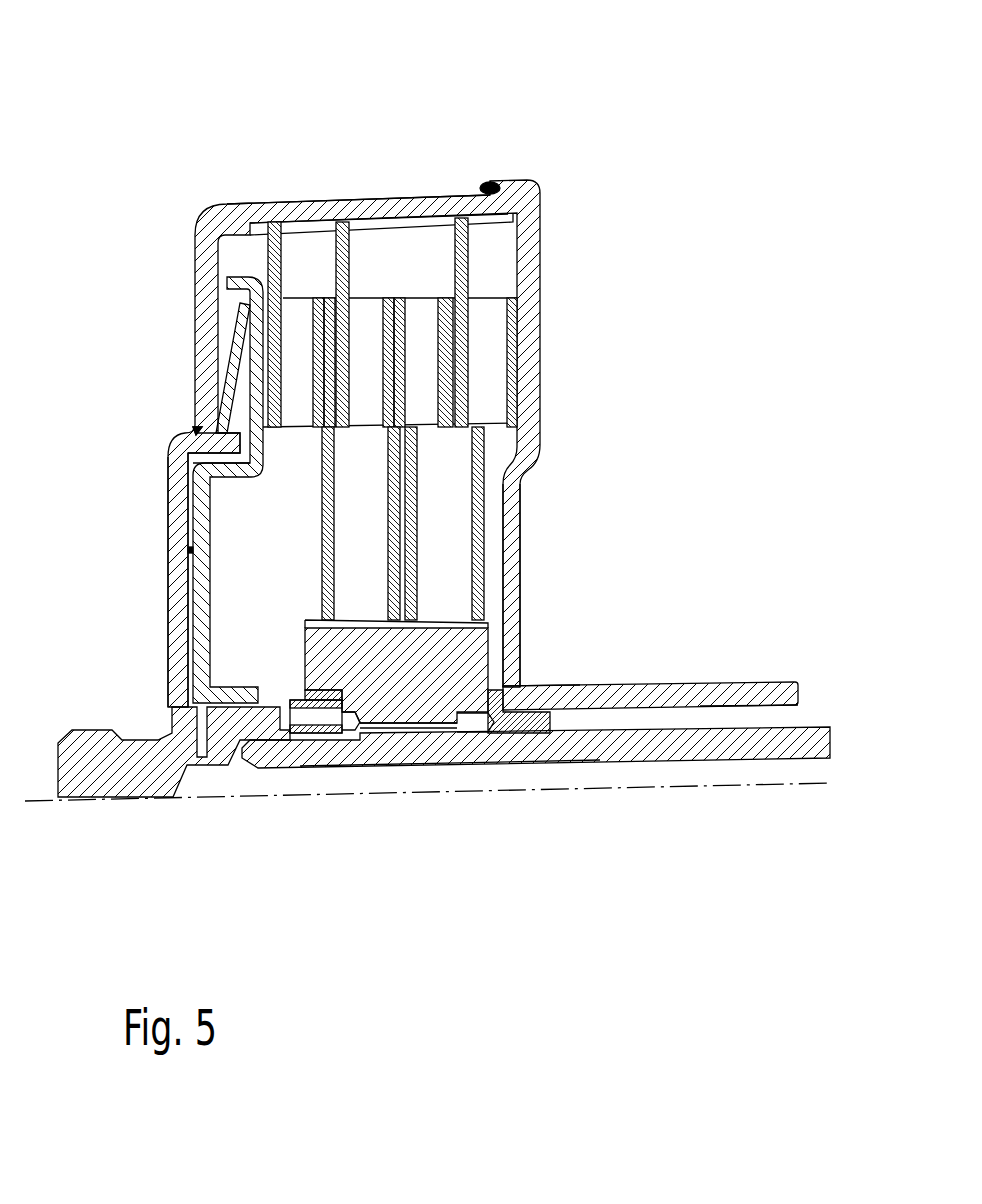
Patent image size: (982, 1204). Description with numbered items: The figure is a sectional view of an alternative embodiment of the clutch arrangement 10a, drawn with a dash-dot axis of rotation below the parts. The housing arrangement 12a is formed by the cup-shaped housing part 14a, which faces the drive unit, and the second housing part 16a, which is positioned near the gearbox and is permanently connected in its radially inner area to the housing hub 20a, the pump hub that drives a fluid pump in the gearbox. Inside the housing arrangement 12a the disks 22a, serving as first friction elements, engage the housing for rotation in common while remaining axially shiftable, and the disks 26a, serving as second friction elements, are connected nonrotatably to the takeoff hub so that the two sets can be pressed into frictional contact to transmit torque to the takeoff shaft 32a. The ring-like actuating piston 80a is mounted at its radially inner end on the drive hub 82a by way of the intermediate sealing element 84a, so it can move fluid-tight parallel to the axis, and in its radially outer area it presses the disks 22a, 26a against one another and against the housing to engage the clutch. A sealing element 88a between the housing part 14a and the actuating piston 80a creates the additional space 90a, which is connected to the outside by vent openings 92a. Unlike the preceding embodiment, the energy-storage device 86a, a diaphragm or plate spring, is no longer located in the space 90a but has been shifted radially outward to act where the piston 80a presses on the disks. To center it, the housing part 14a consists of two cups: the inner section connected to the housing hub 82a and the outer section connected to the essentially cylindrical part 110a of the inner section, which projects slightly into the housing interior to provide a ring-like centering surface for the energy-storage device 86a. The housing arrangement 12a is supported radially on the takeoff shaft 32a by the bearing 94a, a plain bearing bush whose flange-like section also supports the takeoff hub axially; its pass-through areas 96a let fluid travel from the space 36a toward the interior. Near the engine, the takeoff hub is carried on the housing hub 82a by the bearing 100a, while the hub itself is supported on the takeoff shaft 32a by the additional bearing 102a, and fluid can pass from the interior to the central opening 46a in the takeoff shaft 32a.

The clutch arrangement 10a is at (605, 132).
The housing arrangement 12a is at (243, 207).
The housing part 14a is at (168, 686).
The second housing part 16a is at (168, 515).
The housing hub 20a is at (685, 688).
The disks 22a is at (285, 270).
The disks 26a is at (415, 462).
The takeoff shaft 32a is at (637, 748).
The space 36a is at (770, 718).
The central opening 46a is at (597, 772).
The actuating piston 80a is at (203, 445).
The drive hub 82a is at (178, 775).
The sealing element 84a is at (168, 780).
The energy-storage device 86a is at (237, 320).
The sealing element 88a is at (192, 461).
The space 90a is at (202, 610).
The vent openings 92a is at (187, 552).
The bearing 94a is at (520, 735).
The pass-through areas 96a is at (572, 692).
The bearing 100a is at (305, 700).
The bearing 102a is at (340, 735).
The cylindrical part 110a is at (196, 432).